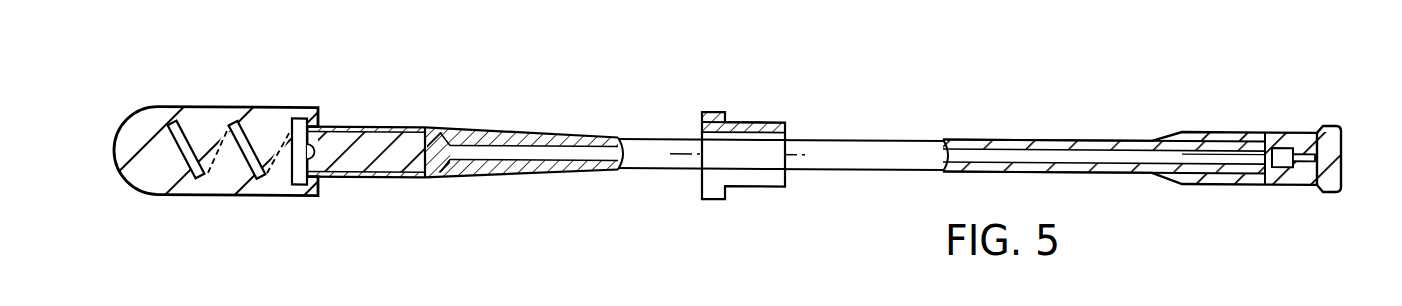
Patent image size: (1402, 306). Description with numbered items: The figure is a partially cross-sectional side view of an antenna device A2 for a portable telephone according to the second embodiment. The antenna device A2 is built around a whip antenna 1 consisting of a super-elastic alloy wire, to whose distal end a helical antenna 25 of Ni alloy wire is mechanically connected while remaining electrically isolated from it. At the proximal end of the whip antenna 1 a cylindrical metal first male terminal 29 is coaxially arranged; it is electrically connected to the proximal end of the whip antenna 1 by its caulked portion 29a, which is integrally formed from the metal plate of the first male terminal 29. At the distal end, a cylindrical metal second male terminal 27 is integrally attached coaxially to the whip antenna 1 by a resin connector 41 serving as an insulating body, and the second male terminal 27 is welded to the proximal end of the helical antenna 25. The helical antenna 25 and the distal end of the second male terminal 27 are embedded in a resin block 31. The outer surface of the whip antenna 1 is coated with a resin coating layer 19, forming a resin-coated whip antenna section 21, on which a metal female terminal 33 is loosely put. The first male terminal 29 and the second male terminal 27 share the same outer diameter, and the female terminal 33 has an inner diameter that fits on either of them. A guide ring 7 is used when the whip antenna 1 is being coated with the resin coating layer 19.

The whip antenna 1 is at (924, 127).
The guide ring 7 is at (522, 129).
The resin coating layer 19 is at (819, 157).
The resin-coated whip antenna section 21 is at (1047, 112).
The helical antenna 25 is at (216, 126).
The second male terminal 27 is at (366, 128).
The first male terminal 29 is at (1248, 138).
The caulked portion 29a is at (1296, 125).
The resin block 31 is at (303, 122).
The female terminal 33 is at (743, 136).
The resin connector 41 is at (371, 174).
The antenna device A2 is at (881, 82).